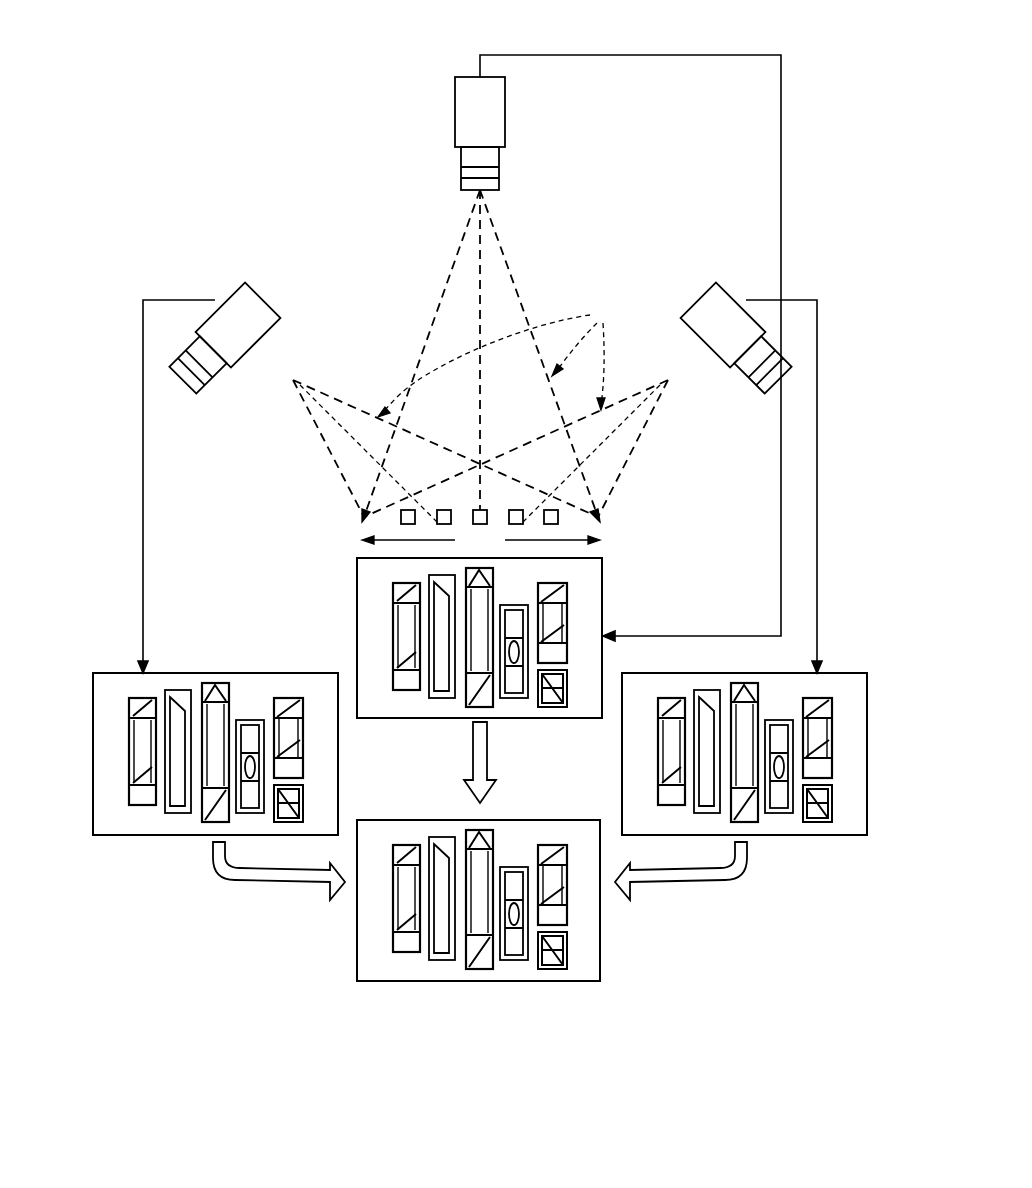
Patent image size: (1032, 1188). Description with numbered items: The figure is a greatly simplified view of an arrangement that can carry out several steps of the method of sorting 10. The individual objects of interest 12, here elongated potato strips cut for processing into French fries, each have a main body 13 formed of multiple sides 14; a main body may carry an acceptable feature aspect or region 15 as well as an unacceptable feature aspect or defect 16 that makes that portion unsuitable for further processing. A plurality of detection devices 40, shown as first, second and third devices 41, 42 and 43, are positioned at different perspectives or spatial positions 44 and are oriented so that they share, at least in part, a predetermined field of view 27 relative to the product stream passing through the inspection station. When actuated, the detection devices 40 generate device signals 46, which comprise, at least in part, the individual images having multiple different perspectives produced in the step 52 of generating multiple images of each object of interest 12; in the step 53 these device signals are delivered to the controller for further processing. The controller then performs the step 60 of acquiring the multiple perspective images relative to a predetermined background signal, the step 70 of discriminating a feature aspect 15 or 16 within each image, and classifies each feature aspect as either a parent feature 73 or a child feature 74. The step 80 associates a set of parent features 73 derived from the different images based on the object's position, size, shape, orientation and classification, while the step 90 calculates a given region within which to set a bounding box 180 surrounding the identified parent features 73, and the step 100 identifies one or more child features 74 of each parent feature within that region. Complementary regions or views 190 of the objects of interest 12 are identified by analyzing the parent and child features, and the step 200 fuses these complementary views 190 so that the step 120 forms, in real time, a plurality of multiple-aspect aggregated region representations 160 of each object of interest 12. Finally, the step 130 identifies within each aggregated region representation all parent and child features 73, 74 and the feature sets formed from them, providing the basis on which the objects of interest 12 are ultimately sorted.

The method of sorting 10 is at (132, 101).
The individual objects of interest 12 is at (408, 510).
The main body 13 is at (478, 510).
The sides 14 is at (442, 510).
The acceptable feature aspect 15 is at (560, 521).
The unacceptable feature aspect 16 is at (513, 510).
The field of view 27 is at (331, 483).
The detection devices 40 is at (480, 240).
The first detection device 41 is at (241, 326).
The second detection device 42 is at (468, 124).
The third detection device 43 is at (738, 343).
The different perspectives or spatial positions 44 is at (432, 113).
The device signals 46 is at (141, 578).
The step of generating multiple images 52 is at (357, 559).
The step of delivering device signals 53 is at (566, 680).
The step of acquiring multiple perspective images 60 is at (362, 564).
The step of discriminating a feature aspect 70 is at (375, 618).
The parent feature 73 is at (435, 590).
The child feature 74 is at (493, 577).
The step of associating parent features 80 is at (563, 590).
The step of calculating a region 90 is at (398, 642).
The step of identifying child features 100 is at (400, 690).
The step of forming aggregated region representations 120 is at (460, 886).
The step of identifying features within aggregated representations 130 is at (570, 886).
The multiple-aspect aggregated region representations 160 is at (497, 840).
The bounding box 180 is at (827, 746).
The complementary regions or views 190 is at (147, 699).
The step of fusing complementary views 200 is at (512, 968).